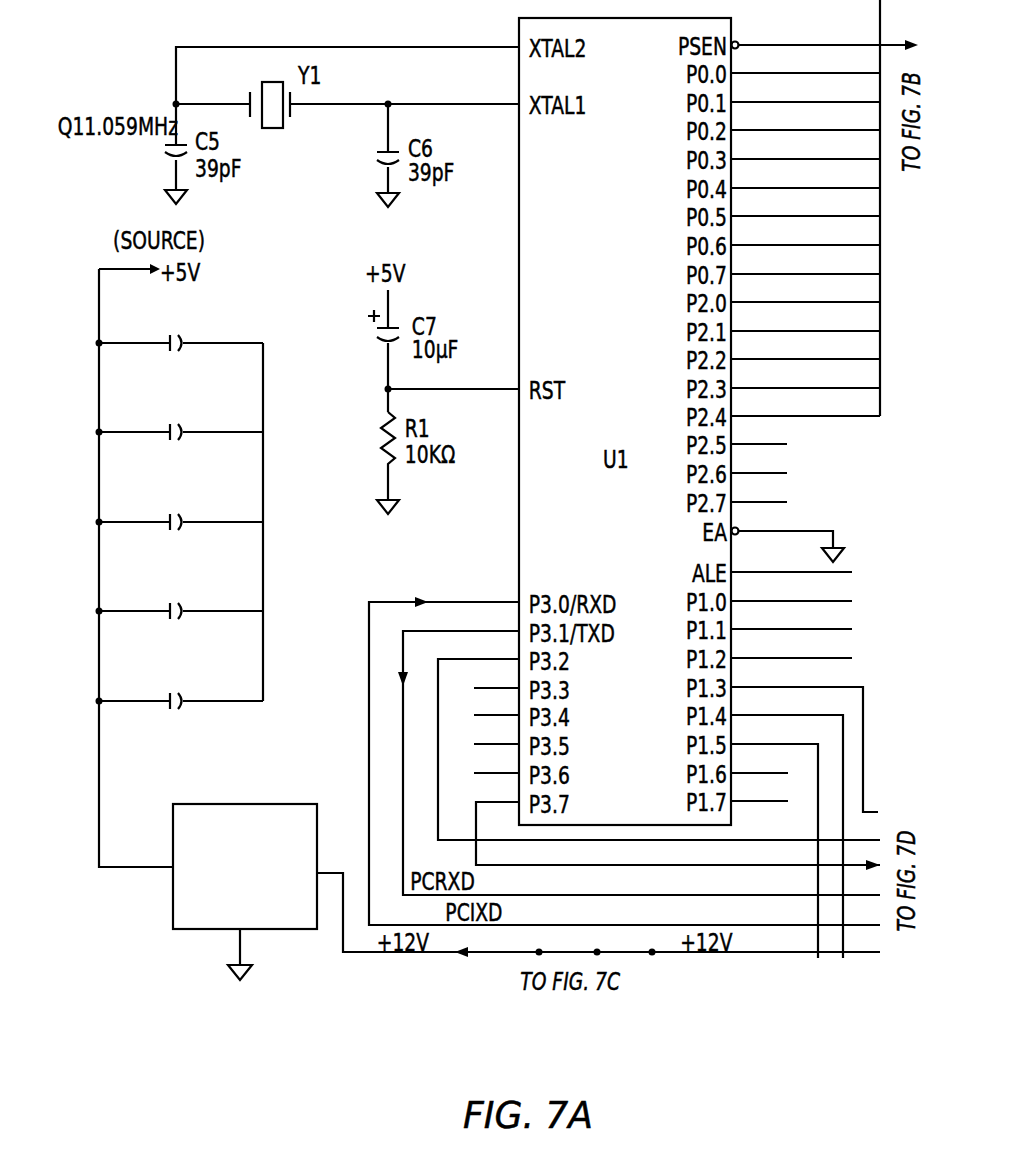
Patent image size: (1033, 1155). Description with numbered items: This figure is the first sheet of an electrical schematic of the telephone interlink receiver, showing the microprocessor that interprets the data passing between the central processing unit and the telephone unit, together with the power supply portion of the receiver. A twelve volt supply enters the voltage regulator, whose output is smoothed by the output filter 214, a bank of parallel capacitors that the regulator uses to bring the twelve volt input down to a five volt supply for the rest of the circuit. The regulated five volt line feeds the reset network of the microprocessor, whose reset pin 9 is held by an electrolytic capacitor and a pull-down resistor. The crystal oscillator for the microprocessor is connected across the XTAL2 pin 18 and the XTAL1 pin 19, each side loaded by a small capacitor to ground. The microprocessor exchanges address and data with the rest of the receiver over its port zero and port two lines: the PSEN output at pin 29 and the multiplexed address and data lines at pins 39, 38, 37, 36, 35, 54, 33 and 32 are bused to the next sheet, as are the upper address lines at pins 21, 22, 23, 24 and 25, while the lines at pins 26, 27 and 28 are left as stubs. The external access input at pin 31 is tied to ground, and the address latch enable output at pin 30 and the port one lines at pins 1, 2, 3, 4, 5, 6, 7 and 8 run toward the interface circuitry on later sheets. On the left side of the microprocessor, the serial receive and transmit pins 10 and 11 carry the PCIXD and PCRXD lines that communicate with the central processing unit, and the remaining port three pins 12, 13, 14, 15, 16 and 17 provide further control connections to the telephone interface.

The output filter 214 is at (281, 715).
The PSEN pin 29 is at (825, 34).
The P0.0 pin 39 is at (805, 61).
The P0.1 pin 38 is at (805, 90).
The P0.2 pin 37 is at (805, 118).
The P0.3 pin 36 is at (805, 147).
The P0.4 pin 35 is at (805, 176).
The P0.5 pin 54 is at (805, 204).
The P0.6 pin 33 is at (805, 233).
The P0.7 pin 32 is at (805, 262).
The P2.0 pin 21 is at (805, 290).
The P2.1 pin 22 is at (805, 319).
The P2.2 pin 23 is at (805, 347).
The P2.3 pin 24 is at (805, 376).
The P2.4 pin 25 is at (805, 404).
The P2.5 pin 26 is at (759, 432).
The P2.6 pin 27 is at (759, 461).
The P2.7 pin 28 is at (759, 490).
The EA pin 31 is at (788, 533).
The ALE pin 30 is at (791, 560).
The P1.0 pin 1 is at (791, 589).
The P1.1 pin 2 is at (791, 617).
The P1.2 pin 3 is at (791, 646).
The P1.3 pin 4 is at (804, 736).
The P1.4 pin 5 is at (787, 823).
The P1.5 pin 6 is at (774, 838).
The P1.6 pin 7 is at (759, 761).
The P1.7 pin 8 is at (759, 789).
The XTAL2 pin 18 is at (347, 62).
The XTAL1 pin 19 is at (404, 91).
The RST pin 9 is at (453, 376).
The P3.0/RXD pin 10 is at (624, 750).
The P3.1/TXD pin 11 is at (639, 749).
The P3.2 pin 12 is at (659, 736).
The P3.3 pin 13 is at (496, 675).
The P3.4 pin 14 is at (496, 702).
The P3.5 pin 15 is at (496, 731).
The P3.6 pin 16 is at (496, 760).
The P3.7 pin 17 is at (678, 822).